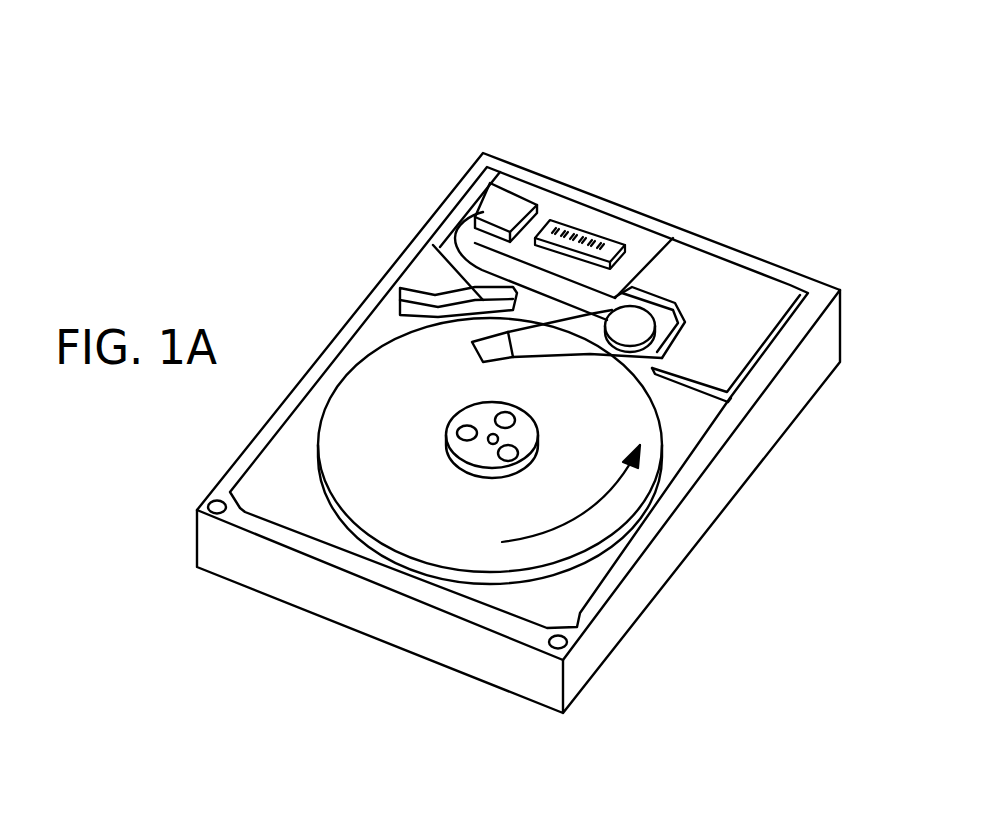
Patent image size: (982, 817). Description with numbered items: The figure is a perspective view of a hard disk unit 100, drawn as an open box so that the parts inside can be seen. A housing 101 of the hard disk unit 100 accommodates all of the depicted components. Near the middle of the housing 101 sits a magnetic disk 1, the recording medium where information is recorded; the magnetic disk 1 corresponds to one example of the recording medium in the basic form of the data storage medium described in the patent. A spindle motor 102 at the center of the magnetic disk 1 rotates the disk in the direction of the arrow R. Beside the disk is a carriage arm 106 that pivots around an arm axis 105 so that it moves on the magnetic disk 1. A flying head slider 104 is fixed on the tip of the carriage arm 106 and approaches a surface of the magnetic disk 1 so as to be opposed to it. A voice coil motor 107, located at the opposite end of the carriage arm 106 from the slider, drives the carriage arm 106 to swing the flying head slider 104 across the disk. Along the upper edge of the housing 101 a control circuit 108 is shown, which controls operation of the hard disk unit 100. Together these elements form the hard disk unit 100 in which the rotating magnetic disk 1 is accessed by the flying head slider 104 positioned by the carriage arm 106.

The magnetic disk 1 is at (420, 500).
The hard disk unit 100 is at (705, 115).
The housing 101 is at (783, 355).
The spindle motor 102 is at (478, 405).
The flying head slider 104 is at (493, 343).
The arm axis 105 is at (630, 330).
The carriage arm 106 is at (577, 333).
The voice coil motor 107 is at (715, 288).
The control circuit 108 is at (562, 232).